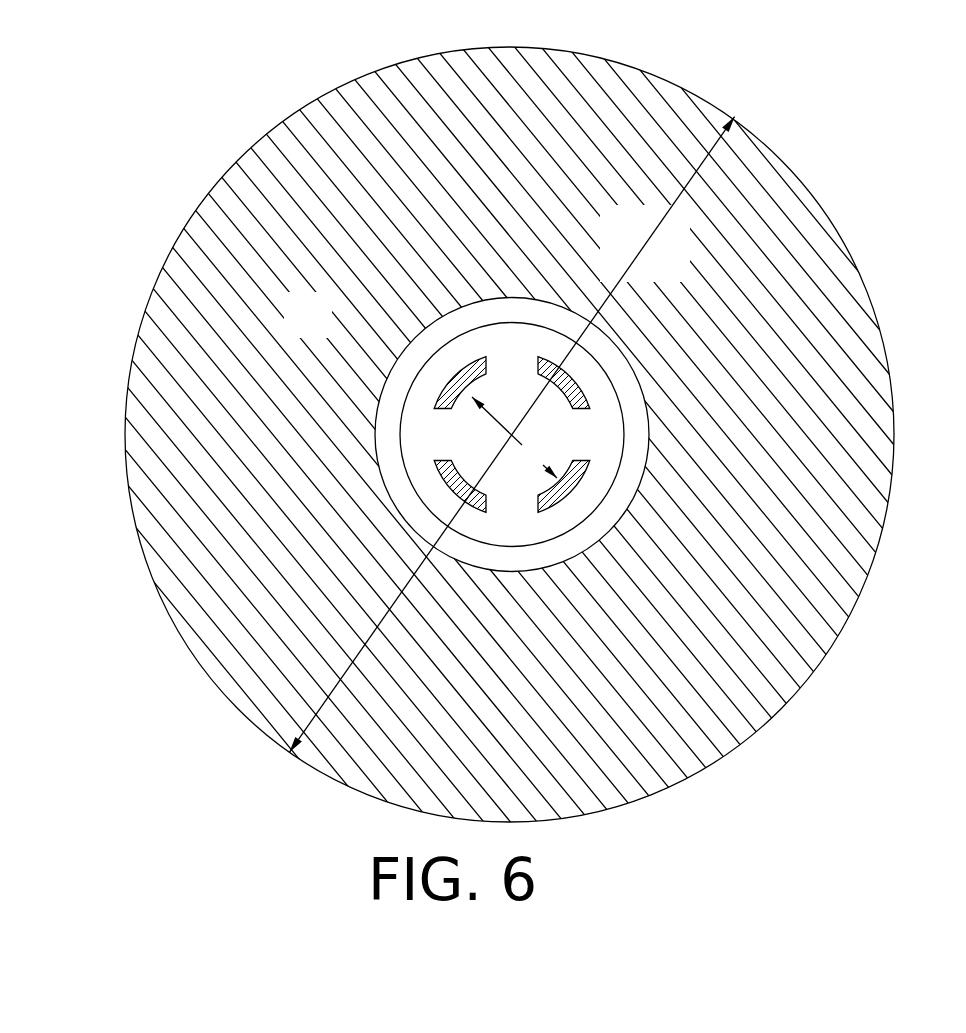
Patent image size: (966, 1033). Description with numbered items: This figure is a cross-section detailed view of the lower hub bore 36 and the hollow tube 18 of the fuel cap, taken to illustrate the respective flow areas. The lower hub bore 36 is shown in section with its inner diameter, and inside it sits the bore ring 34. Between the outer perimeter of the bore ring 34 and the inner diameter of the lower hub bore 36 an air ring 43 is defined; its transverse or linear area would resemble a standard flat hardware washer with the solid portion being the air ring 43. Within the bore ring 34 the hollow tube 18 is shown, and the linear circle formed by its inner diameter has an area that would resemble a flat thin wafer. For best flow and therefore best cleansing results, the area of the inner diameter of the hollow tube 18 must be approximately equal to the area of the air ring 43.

The lower hub bore 36 is at (321, 326).
The air ring 43 is at (628, 397).
The hollow tube 18 is at (577, 477).
The bore ring 34 is at (563, 517).